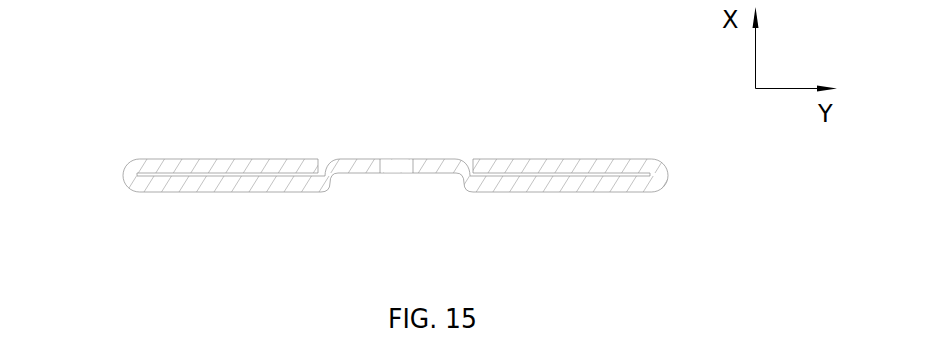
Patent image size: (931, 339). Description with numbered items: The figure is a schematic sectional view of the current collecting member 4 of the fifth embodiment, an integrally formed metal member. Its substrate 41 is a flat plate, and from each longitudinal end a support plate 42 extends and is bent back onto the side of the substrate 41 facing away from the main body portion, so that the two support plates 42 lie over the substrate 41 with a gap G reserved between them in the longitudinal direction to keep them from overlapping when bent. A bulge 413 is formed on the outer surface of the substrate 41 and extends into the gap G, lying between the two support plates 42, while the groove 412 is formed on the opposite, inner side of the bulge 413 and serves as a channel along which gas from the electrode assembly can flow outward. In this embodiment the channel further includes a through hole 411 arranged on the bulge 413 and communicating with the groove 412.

The current collecting member 4 is at (96, 71).
The substrate 41 is at (566, 192).
The support plate 42 is at (229, 159).
The through hole 411 is at (390, 165).
The groove 412 is at (392, 175).
The bulge 413 is at (434, 164).
The gap G is at (322, 160).